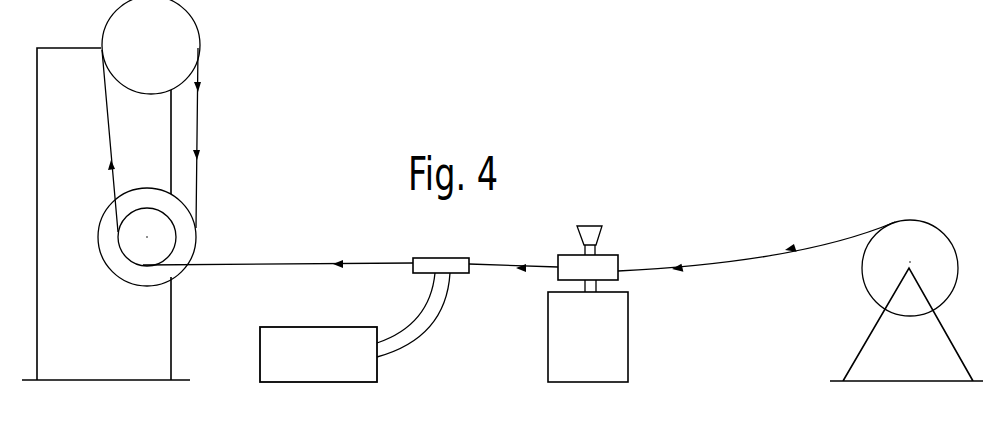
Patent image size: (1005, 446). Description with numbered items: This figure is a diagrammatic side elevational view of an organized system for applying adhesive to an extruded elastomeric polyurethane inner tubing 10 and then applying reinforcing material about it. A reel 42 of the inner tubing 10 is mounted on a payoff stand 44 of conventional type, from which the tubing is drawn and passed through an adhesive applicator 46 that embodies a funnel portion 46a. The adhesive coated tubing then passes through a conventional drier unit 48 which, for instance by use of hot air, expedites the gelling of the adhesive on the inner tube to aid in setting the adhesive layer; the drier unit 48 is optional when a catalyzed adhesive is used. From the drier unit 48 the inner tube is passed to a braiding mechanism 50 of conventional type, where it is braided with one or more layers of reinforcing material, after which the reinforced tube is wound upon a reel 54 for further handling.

The inner tubing 10 is at (810, 245).
The reel 42 is at (933, 225).
The payoff stand 44 is at (952, 337).
The adhesive applicator 46 is at (623, 254).
The funnel portion 46a is at (599, 233).
The drier unit 48 is at (448, 255).
The braiding mechanism 50 is at (205, 47).
The reel 54 is at (172, 277).